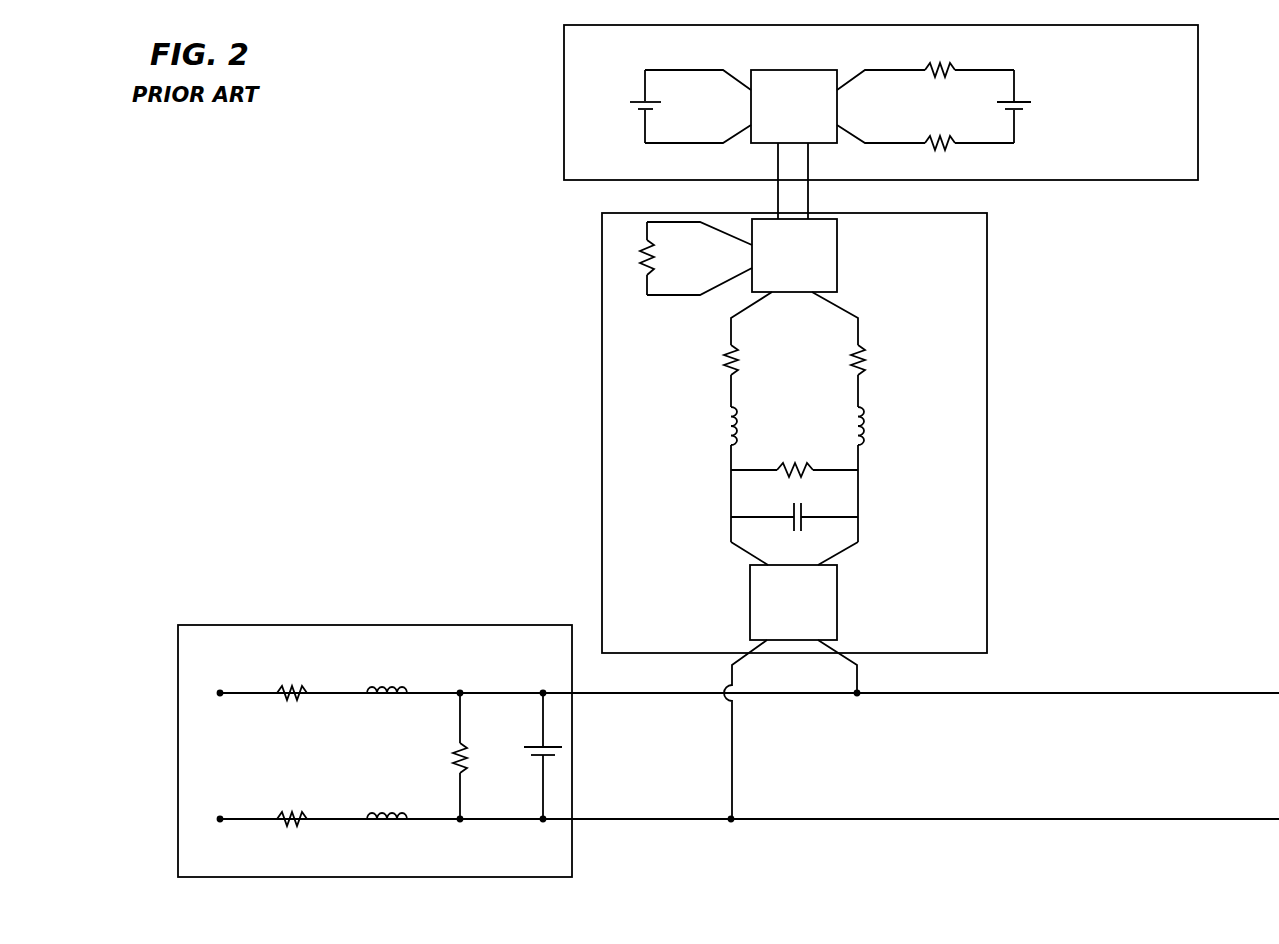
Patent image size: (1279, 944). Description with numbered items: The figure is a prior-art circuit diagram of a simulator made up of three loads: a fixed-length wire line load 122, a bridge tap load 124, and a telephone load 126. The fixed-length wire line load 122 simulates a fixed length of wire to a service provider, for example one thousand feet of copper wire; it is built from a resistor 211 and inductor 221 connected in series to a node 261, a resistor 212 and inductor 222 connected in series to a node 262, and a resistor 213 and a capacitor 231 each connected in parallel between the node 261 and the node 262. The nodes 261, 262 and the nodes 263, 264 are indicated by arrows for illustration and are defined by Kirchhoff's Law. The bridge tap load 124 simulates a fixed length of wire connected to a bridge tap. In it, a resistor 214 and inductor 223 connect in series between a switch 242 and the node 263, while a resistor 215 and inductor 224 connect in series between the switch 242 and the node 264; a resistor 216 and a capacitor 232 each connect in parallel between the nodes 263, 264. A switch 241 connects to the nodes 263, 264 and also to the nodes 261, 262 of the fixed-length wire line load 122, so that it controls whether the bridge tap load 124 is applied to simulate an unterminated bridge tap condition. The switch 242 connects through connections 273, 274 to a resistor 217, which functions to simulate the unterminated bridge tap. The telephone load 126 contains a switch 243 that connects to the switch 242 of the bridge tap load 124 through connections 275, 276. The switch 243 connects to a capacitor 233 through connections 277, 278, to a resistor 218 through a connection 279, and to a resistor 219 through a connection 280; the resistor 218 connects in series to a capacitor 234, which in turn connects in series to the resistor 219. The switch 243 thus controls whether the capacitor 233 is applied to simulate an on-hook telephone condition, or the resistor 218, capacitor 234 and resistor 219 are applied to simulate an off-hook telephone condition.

The fixed-length wire line load 122 is at (565, 871).
The bridge tap load 124 is at (920, 301).
The telephone load 126 is at (1126, 105).
The resistor 211 is at (294, 697).
The resistor 212 is at (297, 812).
The resistor 213 is at (465, 749).
The resistor 214 is at (862, 353).
The resistor 215 is at (736, 353).
The resistor 216 is at (793, 476).
The resistor 217 is at (648, 262).
The resistor 218 is at (936, 70).
The resistor 219 is at (940, 143).
The inductor 221 is at (389, 695).
The inductor 222 is at (391, 813).
The inductor 223 is at (866, 420).
The inductor 224 is at (738, 419).
The capacitor 231 is at (534, 760).
The capacitor 232 is at (806, 527).
The capacitor 233 is at (638, 100).
The capacitor 234 is at (1020, 106).
The switch 241 is at (777, 628).
The switch 242 is at (777, 281).
The switch 243 is at (777, 132).
The node 261 is at (490, 685).
The node 262 is at (513, 826).
The node 263 is at (870, 472).
The node 264 is at (722, 476).
The connection 273 is at (722, 238).
The connection 274 is at (687, 295).
The connection 275 is at (778, 195).
The connection 276 is at (810, 190).
The connection 277 is at (686, 70).
The connection 278 is at (710, 143).
The connection 279 is at (894, 70).
The connection 280 is at (894, 143).